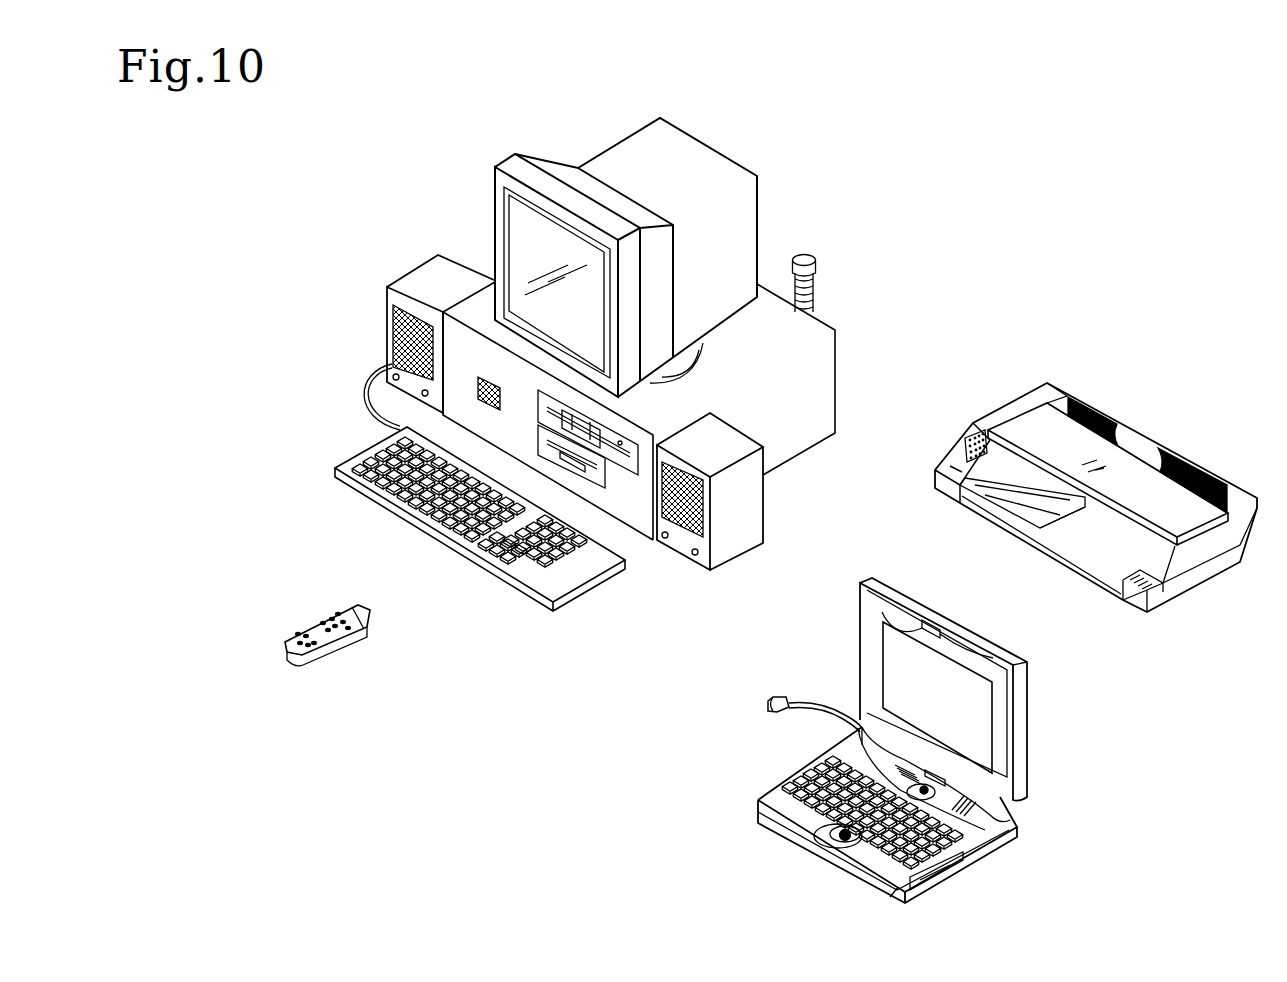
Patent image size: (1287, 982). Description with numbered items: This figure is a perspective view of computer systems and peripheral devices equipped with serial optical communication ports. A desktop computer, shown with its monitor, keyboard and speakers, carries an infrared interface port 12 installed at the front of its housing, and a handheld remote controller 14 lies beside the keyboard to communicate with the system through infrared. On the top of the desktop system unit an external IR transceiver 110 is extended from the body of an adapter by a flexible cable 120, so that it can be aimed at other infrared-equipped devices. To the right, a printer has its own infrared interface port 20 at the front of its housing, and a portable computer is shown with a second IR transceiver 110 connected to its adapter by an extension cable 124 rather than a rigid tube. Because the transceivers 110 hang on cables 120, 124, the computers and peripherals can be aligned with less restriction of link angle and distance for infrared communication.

The infrared interface port 12 is at (478, 398).
The remote controller 14 is at (300, 599).
The infrared interface port 20 is at (963, 438).
The IR transceiver 110 is at (806, 255).
The flexible cable 120 is at (813, 294).
The extension cable 124 is at (820, 700).